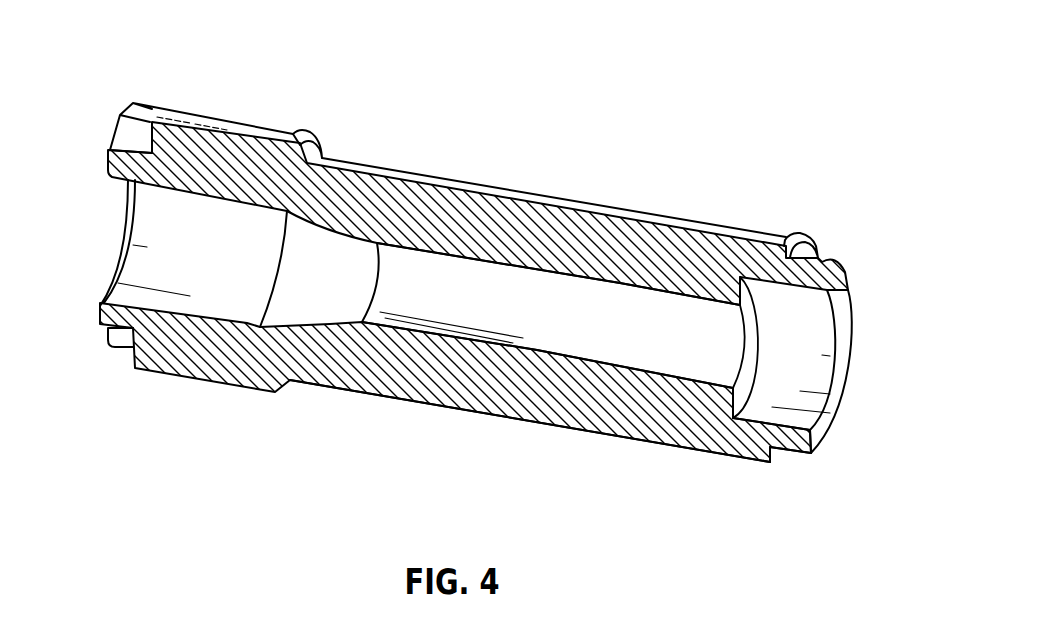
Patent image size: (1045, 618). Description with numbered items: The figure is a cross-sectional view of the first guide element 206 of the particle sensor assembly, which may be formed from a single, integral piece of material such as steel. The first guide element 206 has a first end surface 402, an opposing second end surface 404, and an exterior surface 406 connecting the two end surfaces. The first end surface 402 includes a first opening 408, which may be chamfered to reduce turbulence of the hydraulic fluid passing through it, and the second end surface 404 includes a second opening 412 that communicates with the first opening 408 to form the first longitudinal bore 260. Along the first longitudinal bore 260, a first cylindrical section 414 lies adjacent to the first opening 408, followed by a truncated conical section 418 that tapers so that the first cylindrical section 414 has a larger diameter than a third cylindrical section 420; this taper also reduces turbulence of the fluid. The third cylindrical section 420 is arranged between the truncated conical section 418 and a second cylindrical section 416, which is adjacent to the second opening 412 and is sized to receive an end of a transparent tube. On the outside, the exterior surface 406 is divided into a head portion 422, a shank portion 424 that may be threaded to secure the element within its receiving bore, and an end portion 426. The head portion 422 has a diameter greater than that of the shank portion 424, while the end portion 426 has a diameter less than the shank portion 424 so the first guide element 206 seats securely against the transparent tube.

The first guide element 206 is at (154, 31).
The first longitudinal bore 260 is at (527, 322).
The first end surface 402 is at (100, 308).
The second end surface 404 is at (845, 283).
The exterior surface 406 is at (635, 213).
The first opening 408 is at (120, 249).
The second opening 412 is at (843, 381).
The first cylindrical section 414 is at (203, 318).
The second cylindrical section 416 is at (754, 426).
The truncated conical section 418 is at (330, 324).
The third cylindrical section 420 is at (574, 356).
The head portion 422 is at (237, 128).
The shank portion 424 is at (405, 401).
The end portion 426 is at (815, 256).